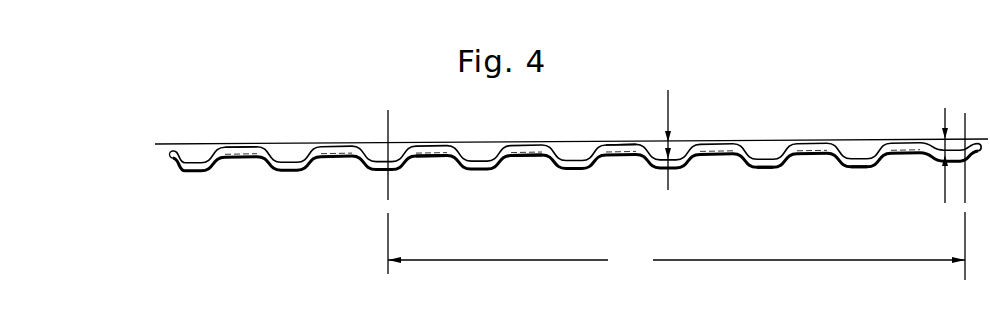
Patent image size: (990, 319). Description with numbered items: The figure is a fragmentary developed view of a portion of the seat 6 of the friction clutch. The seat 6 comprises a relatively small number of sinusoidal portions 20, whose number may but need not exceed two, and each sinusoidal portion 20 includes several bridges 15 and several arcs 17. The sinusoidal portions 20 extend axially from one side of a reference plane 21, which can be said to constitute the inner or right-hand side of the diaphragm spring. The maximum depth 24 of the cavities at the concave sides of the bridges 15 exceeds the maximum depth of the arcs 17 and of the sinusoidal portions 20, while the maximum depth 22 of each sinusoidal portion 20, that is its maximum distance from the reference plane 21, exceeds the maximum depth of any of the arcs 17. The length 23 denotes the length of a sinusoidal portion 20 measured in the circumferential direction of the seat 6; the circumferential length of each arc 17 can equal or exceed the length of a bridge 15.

The seat 6 is at (266, 161).
The bridge 15 is at (772, 168).
The arc 17 is at (435, 156).
The sinusoidal portion 20 is at (270, 135).
The reference plane 21 is at (193, 143).
The maximum depth of sinusoidal portion 22 is at (679, 140).
The length of sinusoidal portion 23 is at (676, 195).
The maximum depth of cavities 24 is at (932, 152).